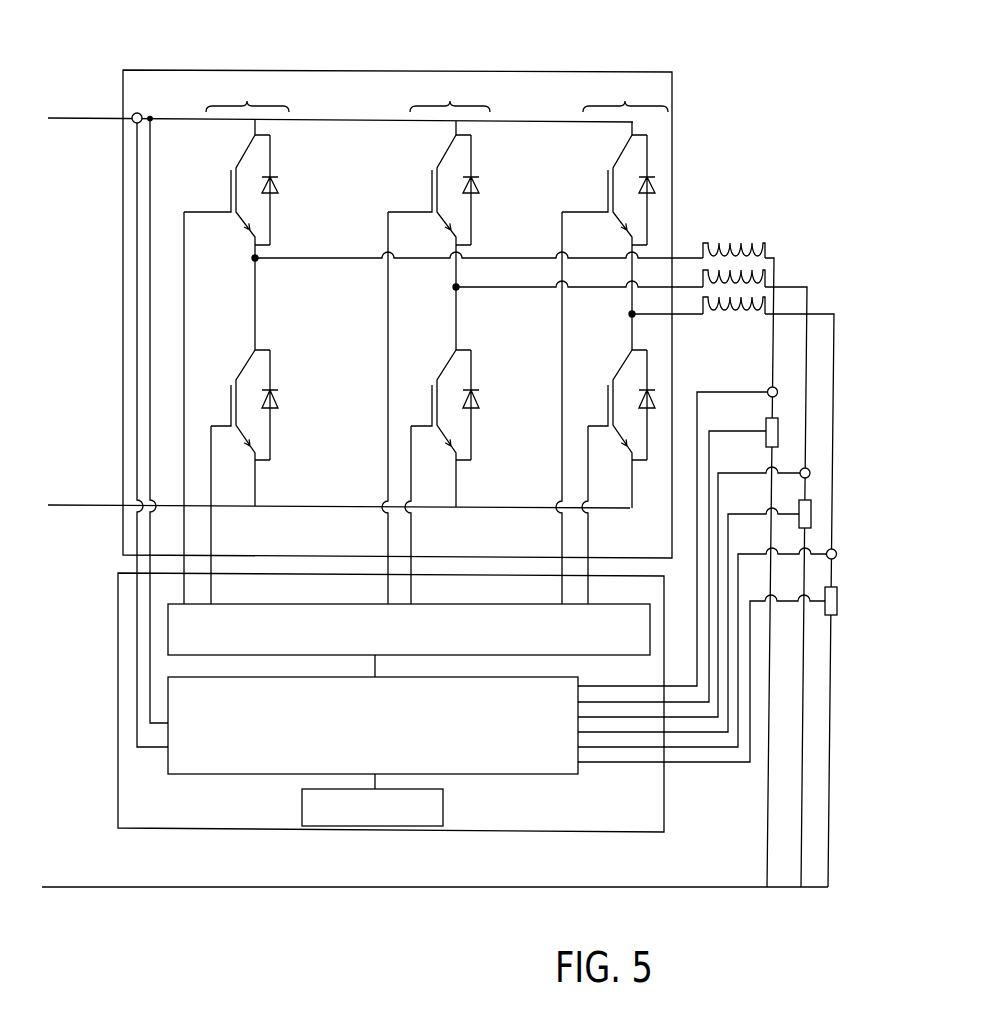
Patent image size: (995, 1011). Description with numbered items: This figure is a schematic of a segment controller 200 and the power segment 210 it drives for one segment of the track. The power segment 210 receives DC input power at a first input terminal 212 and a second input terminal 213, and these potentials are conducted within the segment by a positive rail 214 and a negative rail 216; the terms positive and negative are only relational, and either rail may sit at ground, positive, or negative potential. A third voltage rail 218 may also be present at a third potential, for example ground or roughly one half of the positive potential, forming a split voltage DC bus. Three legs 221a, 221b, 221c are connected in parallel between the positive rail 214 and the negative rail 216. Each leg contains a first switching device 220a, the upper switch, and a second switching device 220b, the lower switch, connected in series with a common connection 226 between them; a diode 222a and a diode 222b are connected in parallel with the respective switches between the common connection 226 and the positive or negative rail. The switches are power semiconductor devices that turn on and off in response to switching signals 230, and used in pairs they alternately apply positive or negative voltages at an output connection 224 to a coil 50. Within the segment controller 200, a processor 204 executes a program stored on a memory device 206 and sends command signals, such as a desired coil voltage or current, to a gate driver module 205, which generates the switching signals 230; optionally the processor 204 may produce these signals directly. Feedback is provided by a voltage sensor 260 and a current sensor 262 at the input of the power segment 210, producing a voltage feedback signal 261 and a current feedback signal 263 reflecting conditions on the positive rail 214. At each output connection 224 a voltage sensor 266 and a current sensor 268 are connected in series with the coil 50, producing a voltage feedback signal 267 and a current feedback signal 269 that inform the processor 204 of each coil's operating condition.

The coil 50 is at (774, 298).
The segment controller 200 is at (118, 797).
The processor 204 is at (228, 744).
The gate driver module 205 is at (228, 641).
The memory device 206 is at (302, 806).
The power segment 210 is at (123, 261).
The first input terminal 212 is at (112, 106).
The second input terminal 213 is at (110, 500).
The positive rail 214 is at (366, 119).
The negative rail 216 is at (309, 505).
The third voltage rail 218 is at (190, 888).
The first switching device 220a is at (224, 192).
The second switching device 220b is at (225, 380).
The first leg 221a is at (247, 292).
The second leg 221b is at (450, 292).
The third leg 221c is at (625, 293).
The diode of first switching device 222a is at (286, 180).
The diode of second switching device 222b is at (285, 388).
The output connection 224 is at (683, 307).
The common connection 226 is at (250, 257).
The switching signals 230 is at (184, 524).
The voltage sensor 260 is at (151, 100).
The voltage feedback signal 261 is at (137, 163).
The current sensor 262 is at (137, 98).
The current feedback signal 263 is at (150, 211).
The voltage sensor 266 is at (846, 597).
The voltage feedback signal 267 is at (632, 762).
The current sensor 268 is at (826, 568).
The current feedback signal 269 is at (686, 748).